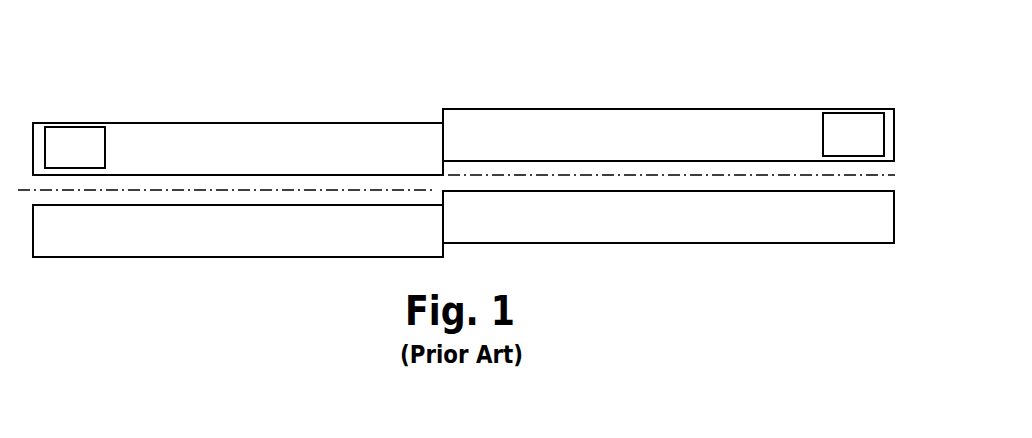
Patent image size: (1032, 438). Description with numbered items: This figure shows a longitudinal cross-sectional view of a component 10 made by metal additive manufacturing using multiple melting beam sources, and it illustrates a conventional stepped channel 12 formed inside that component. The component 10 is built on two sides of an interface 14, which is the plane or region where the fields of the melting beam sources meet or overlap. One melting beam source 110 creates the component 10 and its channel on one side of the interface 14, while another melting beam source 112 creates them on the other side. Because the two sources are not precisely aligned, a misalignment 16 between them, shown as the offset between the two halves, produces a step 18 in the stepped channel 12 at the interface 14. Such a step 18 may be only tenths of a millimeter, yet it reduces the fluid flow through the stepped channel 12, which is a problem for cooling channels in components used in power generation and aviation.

The component 10 is at (479, 148).
The stepped channel 12 is at (449, 203).
The interface 14 is at (449, 136).
The misalignment 16 is at (384, 167).
The step 18 is at (456, 165).
The melting beam source 110 is at (98, 160).
The melting beam source 112 is at (877, 148).